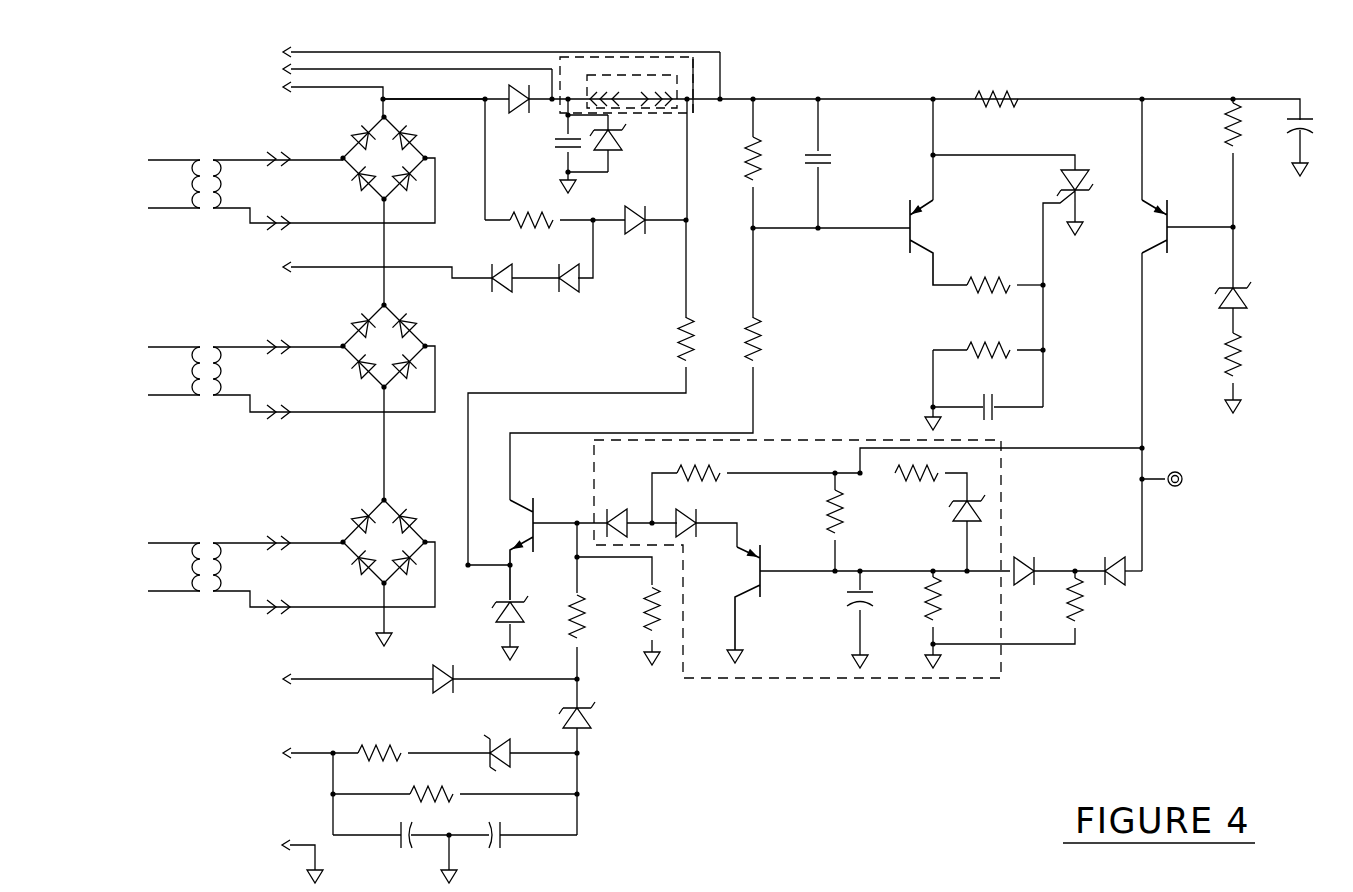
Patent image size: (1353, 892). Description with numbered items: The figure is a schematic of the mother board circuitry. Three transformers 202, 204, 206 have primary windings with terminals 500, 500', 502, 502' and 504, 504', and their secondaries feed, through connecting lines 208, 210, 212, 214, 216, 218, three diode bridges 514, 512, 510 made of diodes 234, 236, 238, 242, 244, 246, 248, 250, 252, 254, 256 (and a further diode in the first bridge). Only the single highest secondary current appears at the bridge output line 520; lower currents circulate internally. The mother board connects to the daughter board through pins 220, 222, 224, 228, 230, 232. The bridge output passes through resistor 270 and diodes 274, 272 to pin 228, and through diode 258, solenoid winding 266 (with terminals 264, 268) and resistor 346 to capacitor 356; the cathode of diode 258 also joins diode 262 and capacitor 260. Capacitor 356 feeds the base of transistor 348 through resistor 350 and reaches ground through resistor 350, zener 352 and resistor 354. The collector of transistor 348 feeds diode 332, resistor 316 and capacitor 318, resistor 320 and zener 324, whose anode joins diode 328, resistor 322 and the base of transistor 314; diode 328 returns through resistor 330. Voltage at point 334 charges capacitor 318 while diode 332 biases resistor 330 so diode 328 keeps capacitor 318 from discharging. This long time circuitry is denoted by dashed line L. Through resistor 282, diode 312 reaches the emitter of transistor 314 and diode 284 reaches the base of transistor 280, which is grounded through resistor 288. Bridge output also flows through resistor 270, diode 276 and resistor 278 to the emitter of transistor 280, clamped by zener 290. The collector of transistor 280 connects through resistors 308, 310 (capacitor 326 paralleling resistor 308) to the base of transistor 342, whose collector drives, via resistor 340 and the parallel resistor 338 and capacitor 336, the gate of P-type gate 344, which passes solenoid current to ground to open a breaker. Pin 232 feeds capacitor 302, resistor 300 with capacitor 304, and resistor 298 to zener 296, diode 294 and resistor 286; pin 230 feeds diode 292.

The transformer 202 is at (203, 172).
The transformer 204 is at (205, 358).
The transformer 206 is at (205, 555).
The connecting line 208 is at (278, 146).
The connecting line 210 is at (324, 194).
The connecting line 212 is at (278, 334).
The connecting line 214 is at (324, 382).
The connecting line 216 is at (278, 531).
The connecting line 218 is at (324, 578).
The pin 220 is at (310, 85).
The pin 222 is at (394, 64).
The pin 224 is at (478, 46).
The pin 228 is at (365, 269).
The pin 230 is at (408, 681).
The pin 232 is at (407, 756).
The diode 234 is at (352, 127).
The diode 236 is at (414, 127).
The diode 238 is at (356, 191).
The diode 242 is at (354, 315).
The diode 244 is at (414, 315).
The diode 246 is at (356, 380).
The diode 248 is at (410, 380).
The diode 250 is at (354, 511).
The diode 252 is at (414, 511).
The diode 254 is at (354, 575).
The diode 256 is at (410, 575).
The diode 258 is at (519, 94).
The capacitor 260 is at (560, 146).
The diode 262 is at (629, 143).
The terminal 264 is at (569, 107).
The solenoid winding 266 is at (634, 97).
The terminal 268 is at (684, 98).
The resistor 270 is at (539, 209).
The diode 272 is at (500, 265).
The diode 274 is at (552, 256).
The diode 276 is at (639, 206).
The resistor 278 is at (579, 394).
The transistor 280 is at (540, 537).
The resistor 282 is at (757, 484).
The diode 284 is at (638, 511).
The resistor 286 is at (573, 610).
The resistor 288 is at (618, 611).
The zener 290 is at (487, 628).
The diode 292 is at (441, 667).
The diode 294 is at (596, 757).
The zener 296 is at (498, 740).
The resistor 298 is at (379, 741).
The resistor 300 is at (453, 794).
The capacitor 302 is at (395, 843).
The capacitor 304 is at (513, 826).
The resistor 308 is at (732, 158).
The resistor 310 is at (732, 339).
The diode 312 is at (702, 516).
The transistor 314 is at (850, 604).
The resistor 316 is at (815, 523).
The capacitor 318 is at (837, 618).
The resistor 320 is at (931, 484).
The resistor 322 is at (913, 618).
The zener diode 324 is at (945, 534).
The capacitor 326 is at (839, 160).
The diode 328 is at (1056, 557).
The resistor 330 is at (1008, 606).
The diode 332 is at (1120, 557).
The point 334 is at (1176, 465).
The capacitor 336 is at (988, 396).
The resistor 338 is at (985, 357).
The resistor 340 is at (1006, 274).
The transistor 342 is at (938, 242).
The p-type gate 344 is at (1054, 227).
The resistor 346 is at (996, 86).
The transistor 348 is at (1142, 226).
The resistor 350 is at (1212, 124).
The zener 352 is at (1211, 280).
The resistor 354 is at (1211, 373).
The capacitor 356 is at (1281, 145).
The terminal 500 is at (151, 163).
The terminal 500' is at (149, 208).
The primary input 502 is at (151, 348).
The primary input 502' is at (149, 396).
The terminal 504 is at (151, 545).
The terminal 504' is at (149, 594).
The diode bridge 510 is at (339, 560).
The diode bridge 512 is at (425, 396).
The diode bridge 514 is at (403, 204).
The diode bridge output line 520 is at (446, 98).
The long time circuitry L is at (847, 683).